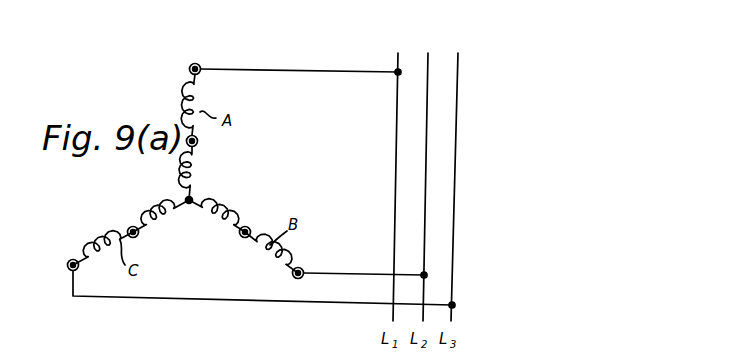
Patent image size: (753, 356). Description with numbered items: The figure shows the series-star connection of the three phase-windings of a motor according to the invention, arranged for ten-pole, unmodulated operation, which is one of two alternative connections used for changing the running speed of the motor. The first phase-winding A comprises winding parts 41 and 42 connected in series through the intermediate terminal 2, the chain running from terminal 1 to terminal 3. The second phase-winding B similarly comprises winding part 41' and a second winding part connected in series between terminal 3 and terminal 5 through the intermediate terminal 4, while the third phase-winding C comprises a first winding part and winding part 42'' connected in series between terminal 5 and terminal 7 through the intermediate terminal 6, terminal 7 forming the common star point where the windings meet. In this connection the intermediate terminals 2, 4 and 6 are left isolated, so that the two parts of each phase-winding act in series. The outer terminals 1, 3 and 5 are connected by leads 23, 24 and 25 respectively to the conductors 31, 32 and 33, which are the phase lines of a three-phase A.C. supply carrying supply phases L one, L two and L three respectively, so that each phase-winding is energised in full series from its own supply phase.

The terminal 1 is at (195, 62).
The terminal 2 is at (198, 141).
The terminal 3 is at (303, 268).
The terminal 4 is at (249, 227).
The terminal 5 is at (67, 265).
The terminal 6 is at (130, 227).
The terminal 7 is at (193, 199).
The line 23 is at (331, 68).
The line 24 is at (370, 262).
The line 25 is at (264, 298).
The phase line 31 is at (396, 203).
The phase line 32 is at (426, 203).
The phase line 33 is at (455, 198).
The winding part 41 is at (211, 104).
The winding part 42 is at (204, 173).
The winding part 41' is at (256, 252).
The winding part 42'' is at (208, 228).